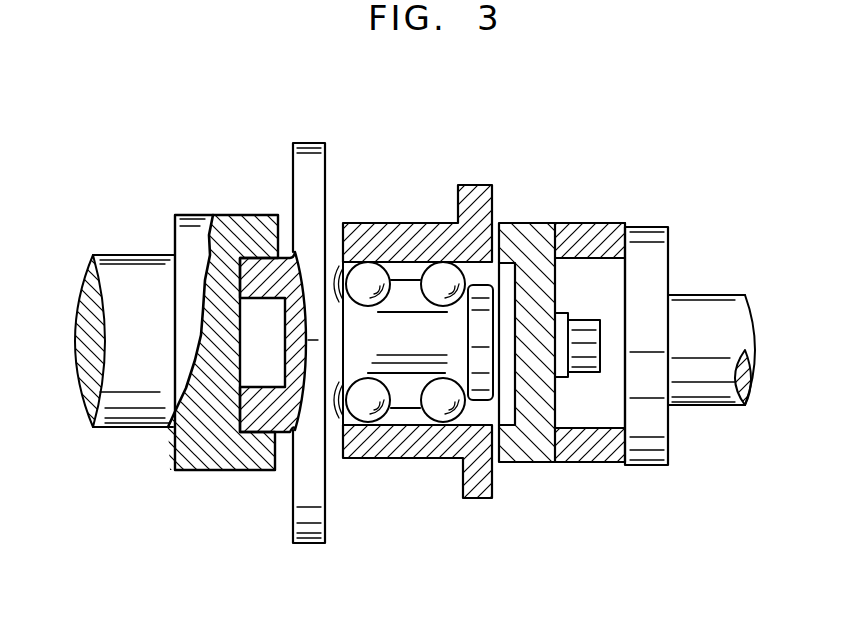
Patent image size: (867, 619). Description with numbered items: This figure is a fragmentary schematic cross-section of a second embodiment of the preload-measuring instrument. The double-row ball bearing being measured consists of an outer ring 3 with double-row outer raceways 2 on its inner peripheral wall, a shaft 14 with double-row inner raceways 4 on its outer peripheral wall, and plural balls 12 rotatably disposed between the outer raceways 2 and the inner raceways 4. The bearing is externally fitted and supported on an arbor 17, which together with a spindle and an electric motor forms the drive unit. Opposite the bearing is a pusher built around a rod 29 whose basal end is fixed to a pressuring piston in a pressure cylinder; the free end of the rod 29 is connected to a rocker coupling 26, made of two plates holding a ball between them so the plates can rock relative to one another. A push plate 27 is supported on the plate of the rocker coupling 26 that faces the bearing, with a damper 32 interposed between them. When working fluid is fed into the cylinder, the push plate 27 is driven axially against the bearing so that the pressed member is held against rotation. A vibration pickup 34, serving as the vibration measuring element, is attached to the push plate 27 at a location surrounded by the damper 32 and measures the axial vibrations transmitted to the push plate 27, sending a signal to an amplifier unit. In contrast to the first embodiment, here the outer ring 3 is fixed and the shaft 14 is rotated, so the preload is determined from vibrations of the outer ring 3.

The outer raceways 2 is at (378, 255).
The outer ring 3 is at (404, 448).
The inner raceways 4 is at (435, 275).
The balls 12 is at (345, 280).
The shaft 14 is at (405, 325).
The arbor 17 is at (133, 272).
The rocker coupling 26 is at (643, 245).
The push plate 27 is at (532, 455).
The rod 29 is at (707, 310).
The damper 32 is at (590, 453).
The vibration pickup 34 is at (587, 332).